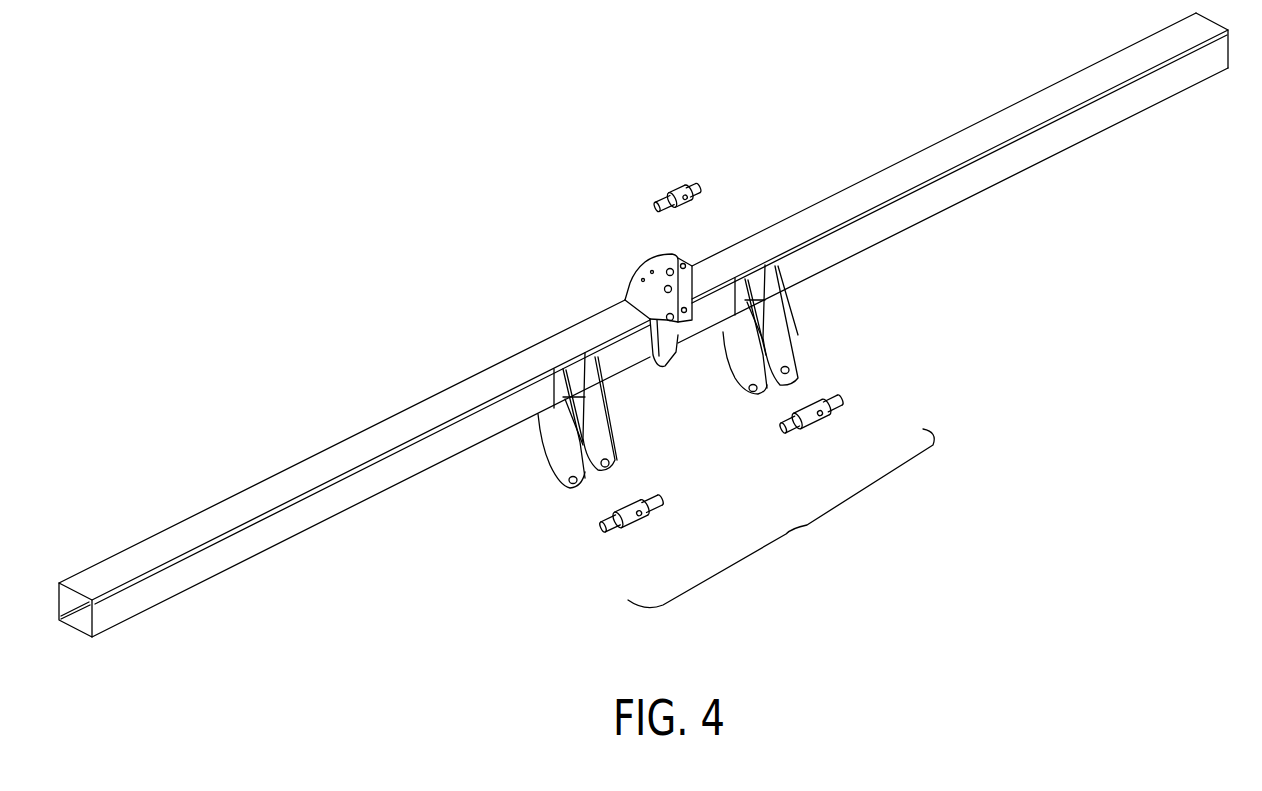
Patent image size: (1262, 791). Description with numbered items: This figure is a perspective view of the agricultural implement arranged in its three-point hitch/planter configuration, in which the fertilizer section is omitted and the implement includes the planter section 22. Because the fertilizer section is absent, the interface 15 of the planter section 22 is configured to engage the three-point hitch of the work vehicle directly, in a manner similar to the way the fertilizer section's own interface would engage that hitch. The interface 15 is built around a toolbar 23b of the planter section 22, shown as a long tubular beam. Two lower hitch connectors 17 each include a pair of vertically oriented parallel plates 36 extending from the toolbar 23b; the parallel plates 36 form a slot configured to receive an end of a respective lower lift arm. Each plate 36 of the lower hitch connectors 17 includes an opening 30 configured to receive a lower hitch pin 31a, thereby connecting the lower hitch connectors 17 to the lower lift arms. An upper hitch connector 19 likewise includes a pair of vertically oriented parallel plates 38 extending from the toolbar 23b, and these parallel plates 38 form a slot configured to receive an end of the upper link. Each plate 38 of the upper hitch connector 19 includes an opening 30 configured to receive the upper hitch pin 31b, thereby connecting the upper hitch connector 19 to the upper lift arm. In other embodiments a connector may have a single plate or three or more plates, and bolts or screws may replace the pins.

The interface 15 is at (805, 527).
The lower hitch connectors 17 is at (552, 515).
The upper hitch connector 19 is at (625, 220).
The planter section 22 is at (388, 390).
The toolbar 23b is at (87, 568).
The opening 30 is at (690, 260).
The lower hitch pin 31a is at (812, 432).
The upper hitch pin 31b is at (694, 186).
The parallel plates 36 is at (605, 475).
The parallel plates 38 is at (637, 277).